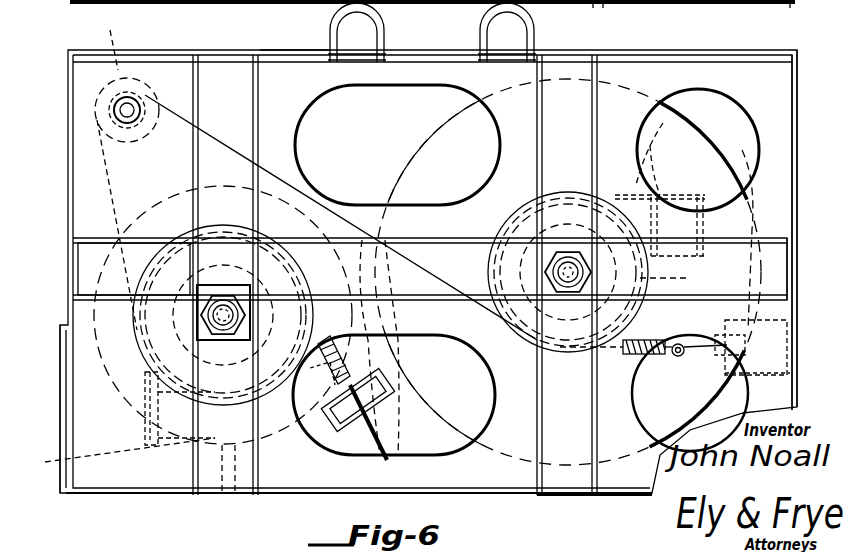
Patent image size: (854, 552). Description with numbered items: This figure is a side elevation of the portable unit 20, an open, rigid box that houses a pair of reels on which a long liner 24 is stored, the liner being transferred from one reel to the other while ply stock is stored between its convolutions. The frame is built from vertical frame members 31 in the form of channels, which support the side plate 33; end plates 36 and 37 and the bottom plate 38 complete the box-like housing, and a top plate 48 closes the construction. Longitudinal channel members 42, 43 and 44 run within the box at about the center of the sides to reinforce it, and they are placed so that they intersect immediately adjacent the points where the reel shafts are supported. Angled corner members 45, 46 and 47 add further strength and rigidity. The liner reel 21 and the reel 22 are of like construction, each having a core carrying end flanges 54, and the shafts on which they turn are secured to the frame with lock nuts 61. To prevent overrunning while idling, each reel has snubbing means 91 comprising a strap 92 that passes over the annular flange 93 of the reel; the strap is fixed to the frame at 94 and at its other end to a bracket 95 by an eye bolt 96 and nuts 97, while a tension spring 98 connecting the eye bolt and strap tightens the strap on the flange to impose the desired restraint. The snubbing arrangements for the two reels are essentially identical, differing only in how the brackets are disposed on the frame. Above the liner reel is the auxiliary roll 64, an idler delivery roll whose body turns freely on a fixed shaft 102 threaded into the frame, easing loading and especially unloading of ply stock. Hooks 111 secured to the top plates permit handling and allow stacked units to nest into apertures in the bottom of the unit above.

The portable unit 20 is at (130, 492).
The liner reel 21 is at (305, 170).
The reel 22 is at (704, 116).
The liner 24 is at (296, 137).
The vertical frame member 31 is at (630, 22).
The side plate 33 is at (364, 84).
The end plate 36 is at (68, 240).
The end plate 37 is at (800, 258).
The bottom plate 38 is at (496, 495).
The channel member 42 is at (82, 238).
The channel member 43 is at (362, 238).
The channel member 44 is at (742, 190).
The angled corner member 45 is at (60, 366).
The angled corner member 46 is at (766, 56).
The angled corner member 47 is at (580, 498).
The top plate 48 is at (306, 46).
The end flange 54 is at (440, 136).
The lock nut 61 is at (232, 292).
The auxiliary roll 64 is at (102, 173).
The snubbing means 91 is at (708, 258).
The strap 92 is at (332, 288).
The annular flange 93 is at (268, 522).
The strap attachment point 94 is at (350, 301).
The bracket 95 is at (782, 300).
The eye bolt 96 is at (680, 380).
The nuts 97 is at (790, 328).
The tension spring 98 is at (638, 372).
The fixed shaft 102 is at (118, 110).
The hook 111 is at (478, 30).